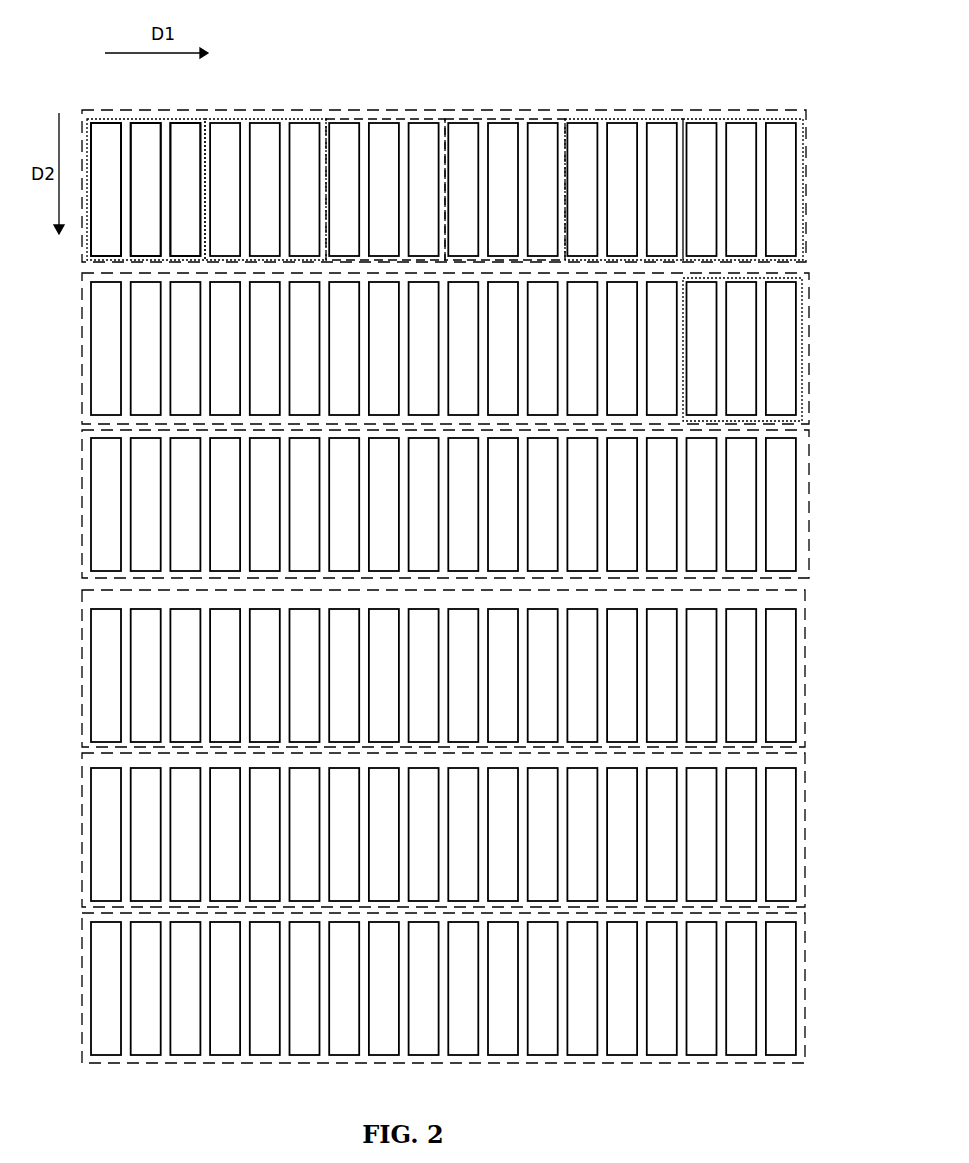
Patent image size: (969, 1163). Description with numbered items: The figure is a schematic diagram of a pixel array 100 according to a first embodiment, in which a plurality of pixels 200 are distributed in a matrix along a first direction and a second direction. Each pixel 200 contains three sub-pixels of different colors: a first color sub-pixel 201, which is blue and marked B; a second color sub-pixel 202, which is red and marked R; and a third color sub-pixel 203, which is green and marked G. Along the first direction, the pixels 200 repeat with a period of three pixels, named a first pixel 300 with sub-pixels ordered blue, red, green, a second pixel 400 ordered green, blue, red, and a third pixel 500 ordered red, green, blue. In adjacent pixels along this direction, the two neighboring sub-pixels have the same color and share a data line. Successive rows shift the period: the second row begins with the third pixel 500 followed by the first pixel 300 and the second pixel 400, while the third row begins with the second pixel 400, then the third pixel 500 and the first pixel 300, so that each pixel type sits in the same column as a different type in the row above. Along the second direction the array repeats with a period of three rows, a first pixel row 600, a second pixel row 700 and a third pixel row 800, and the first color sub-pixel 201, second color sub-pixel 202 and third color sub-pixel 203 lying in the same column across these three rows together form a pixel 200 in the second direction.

The pixel array 100 is at (407, 21).
The pixel 200 is at (803, 348).
The first color sub-pixel 201 is at (110, 122).
The second color sub-pixel 202 is at (150, 122).
The third color sub-pixel 203 is at (185, 122).
The first pixel 300 is at (196, 116).
The second pixel 400 is at (263, 120).
The third pixel 500 is at (390, 115).
The first pixel row 600 is at (808, 192).
The second pixel row 700 is at (811, 300).
The third pixel row 800 is at (811, 494).